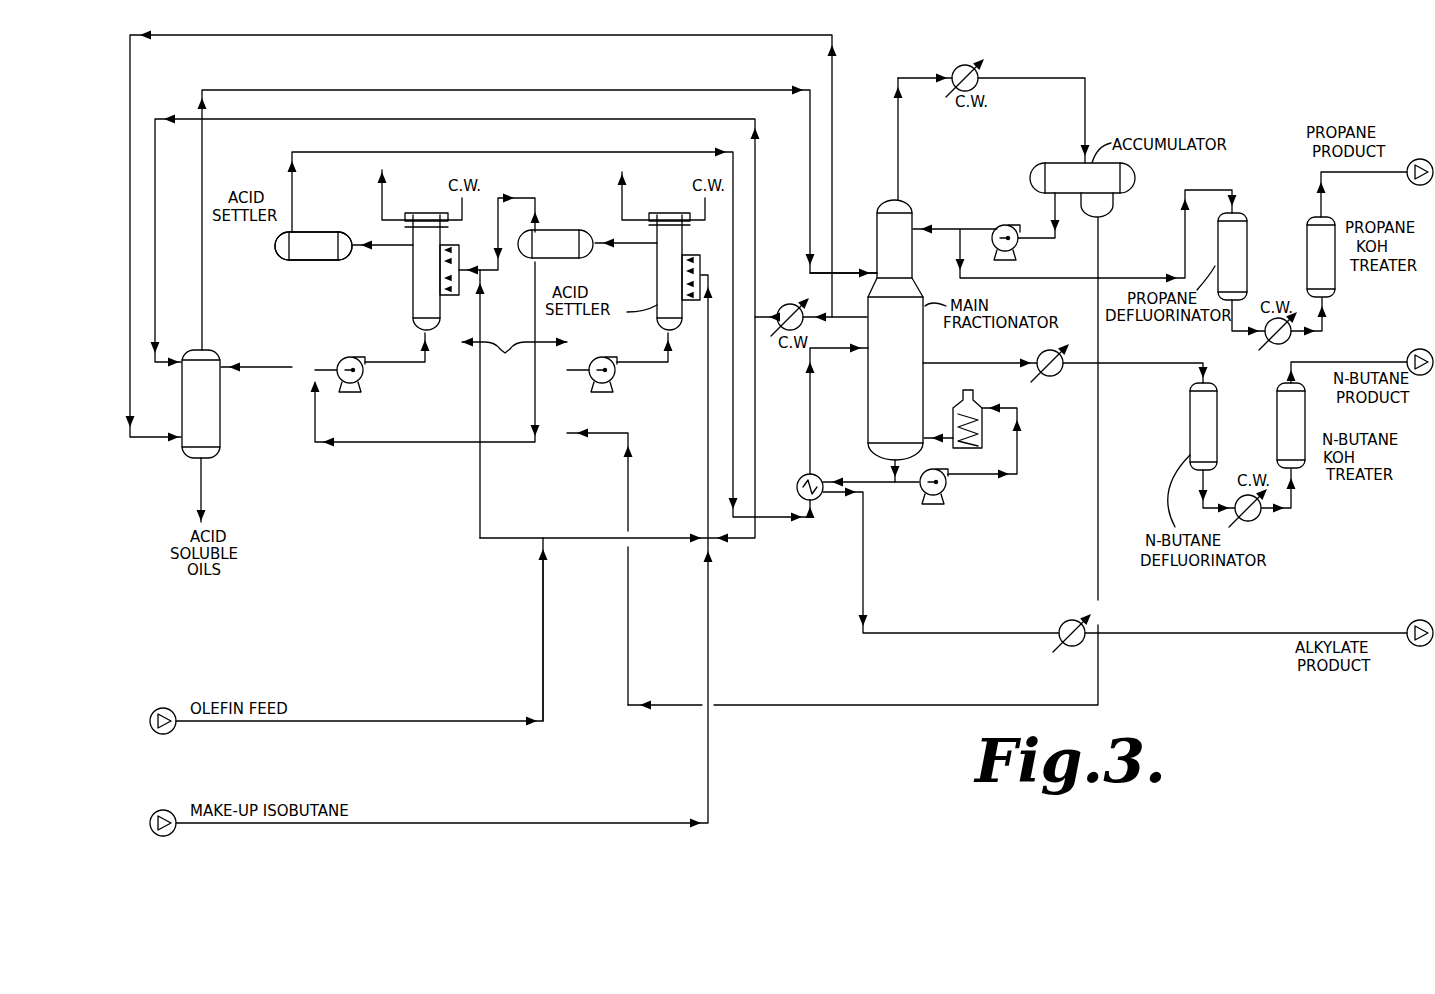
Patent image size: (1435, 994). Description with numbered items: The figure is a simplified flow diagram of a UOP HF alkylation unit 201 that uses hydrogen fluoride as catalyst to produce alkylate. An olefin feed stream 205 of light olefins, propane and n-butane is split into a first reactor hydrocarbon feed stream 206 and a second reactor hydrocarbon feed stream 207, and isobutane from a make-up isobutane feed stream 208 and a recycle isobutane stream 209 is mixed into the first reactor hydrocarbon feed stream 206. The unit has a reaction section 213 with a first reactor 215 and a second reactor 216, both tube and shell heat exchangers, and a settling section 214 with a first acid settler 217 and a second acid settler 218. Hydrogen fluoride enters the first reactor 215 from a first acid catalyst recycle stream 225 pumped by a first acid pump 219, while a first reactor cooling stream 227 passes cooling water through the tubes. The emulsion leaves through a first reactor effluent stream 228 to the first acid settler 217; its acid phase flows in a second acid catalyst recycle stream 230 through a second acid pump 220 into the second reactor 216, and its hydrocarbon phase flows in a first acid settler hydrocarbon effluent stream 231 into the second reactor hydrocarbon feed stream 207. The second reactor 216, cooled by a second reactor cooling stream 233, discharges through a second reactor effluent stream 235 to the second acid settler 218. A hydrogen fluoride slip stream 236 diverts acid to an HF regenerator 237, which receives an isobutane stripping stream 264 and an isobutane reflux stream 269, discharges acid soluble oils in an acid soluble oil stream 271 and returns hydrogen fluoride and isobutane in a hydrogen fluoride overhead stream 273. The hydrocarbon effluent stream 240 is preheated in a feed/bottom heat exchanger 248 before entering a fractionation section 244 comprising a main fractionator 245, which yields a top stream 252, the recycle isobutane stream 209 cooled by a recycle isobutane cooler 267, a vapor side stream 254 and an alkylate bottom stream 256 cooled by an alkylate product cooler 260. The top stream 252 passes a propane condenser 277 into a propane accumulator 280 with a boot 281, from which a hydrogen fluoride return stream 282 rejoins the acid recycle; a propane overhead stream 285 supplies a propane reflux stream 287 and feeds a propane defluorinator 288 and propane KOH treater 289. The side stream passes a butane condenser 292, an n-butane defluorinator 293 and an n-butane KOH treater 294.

The UOP HF alkylation unit 201 is at (739, 727).
The olefin feed stream 205 is at (408, 722).
The first reactor hydrocarbon feed stream 206 is at (581, 540).
The second reactor hydrocarbon feed stream 207 is at (481, 548).
The make-up isobutane feed stream 208 is at (410, 825).
The recycle isobutane stream 209 is at (745, 540).
The reaction section 213 is at (514, 404).
The settling section 214 is at (568, 195).
The first reactor 215 is at (654, 279).
The second reactor 216 is at (412, 305).
The first acid settler 217 is at (563, 231).
The second acid settler 218 is at (334, 208).
The first acid pump 219 is at (616, 372).
The second acid pump 220 is at (352, 393).
The first acid catalyst recycle stream 225 is at (567, 407).
The first reactor cooling stream 227 is at (700, 207).
The first reactor effluent stream 228 is at (625, 248).
The second acid catalyst recycle stream 230 is at (378, 445).
The first acid settler hydrocarbon effluent stream 231 is at (520, 198).
The second reactor cooling stream 233 is at (455, 205).
The second reactor effluent stream 235 is at (378, 250).
The hydrogen fluoride slip stream 236 is at (251, 372).
The HF regenerator 237 is at (222, 445).
The hydrocarbon effluent stream 240 is at (343, 153).
The fractionation section 244 is at (914, 184).
The main fractionator 245 is at (876, 228).
The feed/bottom heat exchanger 248 is at (800, 476).
The top stream 252 is at (897, 138).
The vapor side stream 254 is at (945, 362).
The bottom stream 256 is at (886, 468).
The alkylate product cooler 260 is at (1060, 618).
The isobutane stripping stream 264 is at (833, 80).
The recycle isobutane cooler 267 is at (782, 306).
The isobutane reflux stream 269 is at (756, 215).
The acid soluble oil stream 271 is at (196, 500).
The hydrogen fluoride overhead stream 273 is at (203, 307).
The propane condenser 277 is at (950, 68).
The propane accumulator 280 is at (1032, 180).
The boot 281 is at (1112, 210).
The hydrogen fluoride return stream 282 is at (629, 493).
The propane overhead stream 285 is at (1053, 209).
The propane reflux stream 287 is at (942, 229).
The propane defluorinator 288 is at (1249, 240).
The propane KOH treater 289 is at (1305, 249).
The butane condenser 292 is at (1056, 377).
The n-butane defluorinator 293 is at (1217, 413).
The n-butane KOH treater 294 is at (1277, 445).